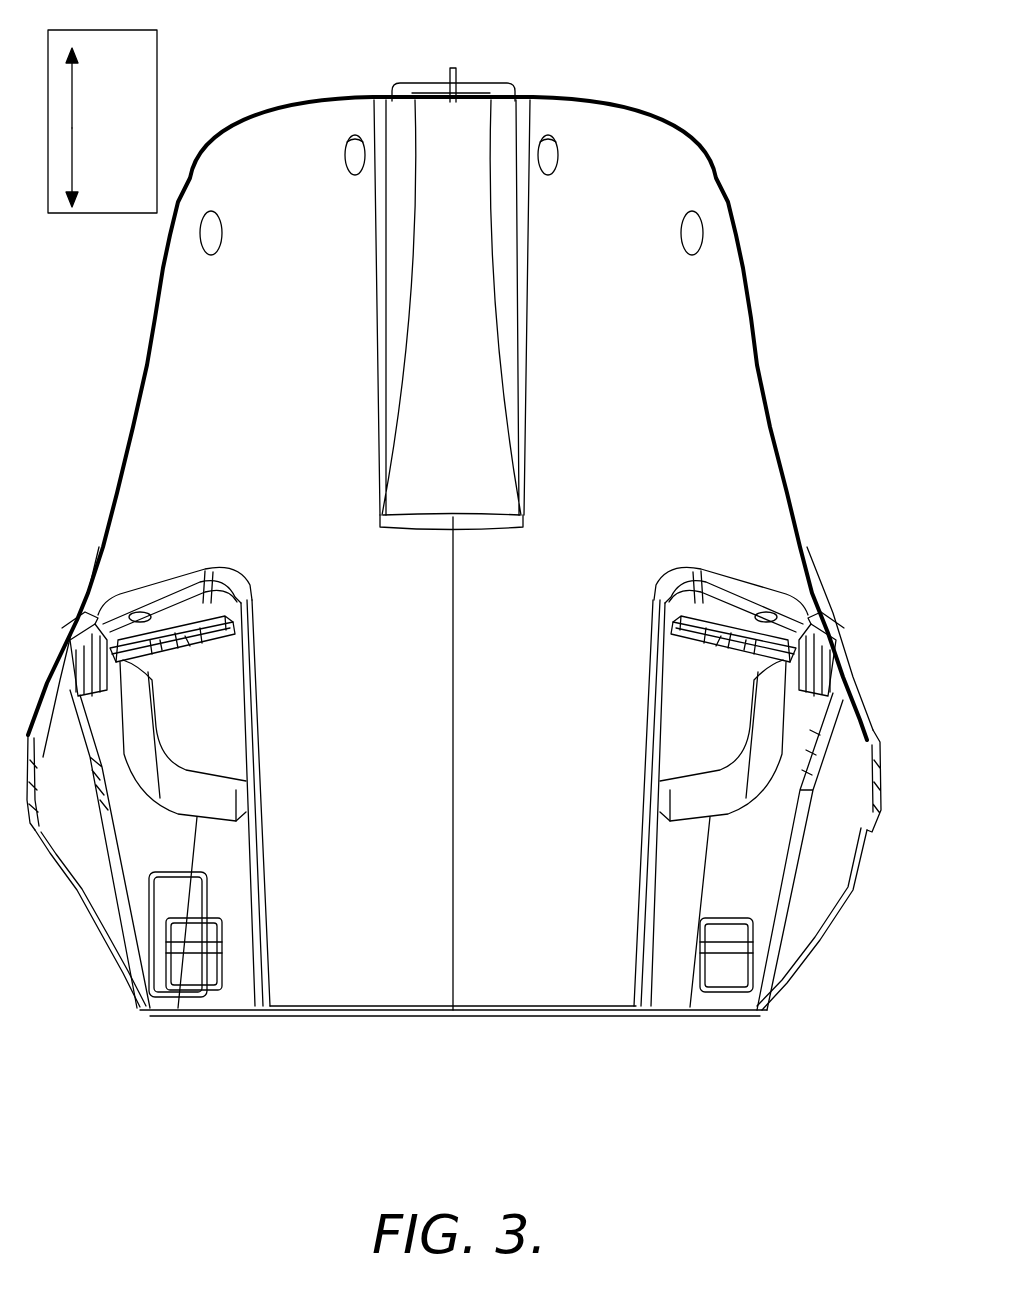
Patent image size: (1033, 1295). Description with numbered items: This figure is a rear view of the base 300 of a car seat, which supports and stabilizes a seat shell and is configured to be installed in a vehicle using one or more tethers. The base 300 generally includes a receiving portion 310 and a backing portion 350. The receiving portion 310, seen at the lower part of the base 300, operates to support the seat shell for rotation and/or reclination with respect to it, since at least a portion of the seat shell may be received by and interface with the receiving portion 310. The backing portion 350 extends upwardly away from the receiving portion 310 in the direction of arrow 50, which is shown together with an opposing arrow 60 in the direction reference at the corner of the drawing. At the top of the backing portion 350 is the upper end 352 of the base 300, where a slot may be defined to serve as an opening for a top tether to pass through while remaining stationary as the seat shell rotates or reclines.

The base 300 is at (469, 509).
The backing portion 350 is at (712, 330).
The upper end 352 is at (362, 97).
The receiving portion 310 is at (758, 908).
The arrow 50 is at (95, 88).
The second direction 60 is at (95, 167).